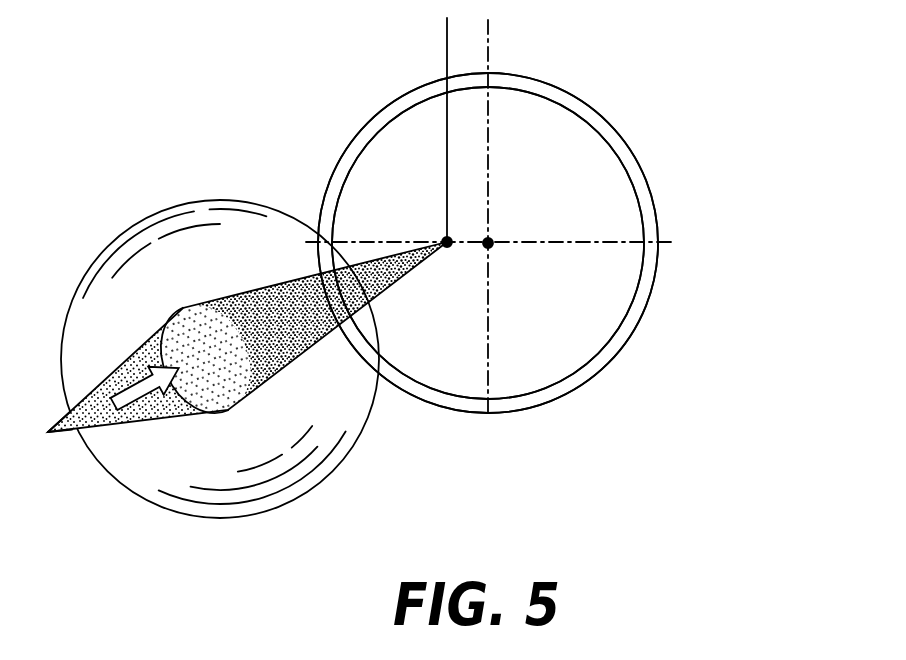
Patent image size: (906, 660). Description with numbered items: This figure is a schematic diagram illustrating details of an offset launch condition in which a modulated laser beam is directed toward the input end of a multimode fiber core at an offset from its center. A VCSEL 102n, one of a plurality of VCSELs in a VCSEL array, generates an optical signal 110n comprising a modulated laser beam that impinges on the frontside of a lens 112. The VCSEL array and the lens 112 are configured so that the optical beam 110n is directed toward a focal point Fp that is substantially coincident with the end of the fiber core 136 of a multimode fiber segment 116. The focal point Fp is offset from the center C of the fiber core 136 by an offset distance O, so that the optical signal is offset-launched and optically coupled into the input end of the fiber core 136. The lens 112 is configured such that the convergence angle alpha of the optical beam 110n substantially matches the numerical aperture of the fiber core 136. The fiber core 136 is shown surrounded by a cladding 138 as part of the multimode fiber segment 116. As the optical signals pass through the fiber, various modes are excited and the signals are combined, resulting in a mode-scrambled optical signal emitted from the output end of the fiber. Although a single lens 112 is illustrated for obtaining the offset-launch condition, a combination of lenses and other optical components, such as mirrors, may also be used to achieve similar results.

The VCSEL 102n is at (48, 433).
The optical signal 110n is at (383, 305).
The lens 112 is at (226, 504).
The multimode fiber segment 116 is at (681, 283).
The fiber core 136 is at (528, 175).
The cladding 138 is at (658, 228).
The center of the fiber core C is at (488, 243).
The offset distance O is at (537, 43).
The focal point Fp is at (447, 242).
The convergence angle alpha is at (346, 256).